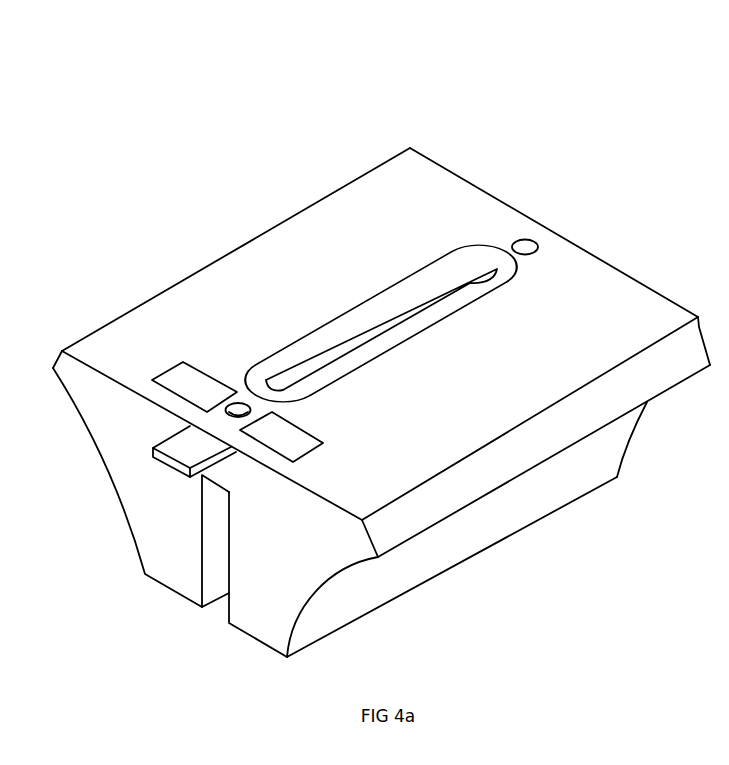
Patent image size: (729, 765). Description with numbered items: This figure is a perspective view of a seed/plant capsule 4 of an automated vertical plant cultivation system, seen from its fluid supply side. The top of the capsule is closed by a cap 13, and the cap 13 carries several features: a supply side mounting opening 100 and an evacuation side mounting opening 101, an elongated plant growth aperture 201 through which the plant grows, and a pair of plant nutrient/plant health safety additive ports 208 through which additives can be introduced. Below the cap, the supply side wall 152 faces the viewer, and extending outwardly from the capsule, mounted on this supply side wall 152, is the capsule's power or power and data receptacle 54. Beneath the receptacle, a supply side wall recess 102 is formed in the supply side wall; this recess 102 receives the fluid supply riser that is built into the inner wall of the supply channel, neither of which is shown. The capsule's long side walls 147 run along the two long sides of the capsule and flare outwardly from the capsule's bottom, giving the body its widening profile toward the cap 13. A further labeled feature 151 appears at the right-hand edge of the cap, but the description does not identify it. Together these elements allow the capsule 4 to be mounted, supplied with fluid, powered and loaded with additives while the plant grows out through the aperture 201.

The seed/plant capsule 4 is at (182, 70).
The cap 13 is at (433, 177).
The power or power and data receptacle 54 is at (158, 465).
The supply side mounting opening 100 is at (237, 402).
The evacuation side mounting opening 101 is at (525, 239).
The supply side wall recess 102 is at (159, 546).
The long side walls 147 is at (192, 273).
The right edge 151 is at (643, 283).
The supply side wall 152 is at (263, 623).
The plant growth aperture 201 is at (376, 315).
The plant nutrient/plant health safety additive port 208 is at (175, 378).